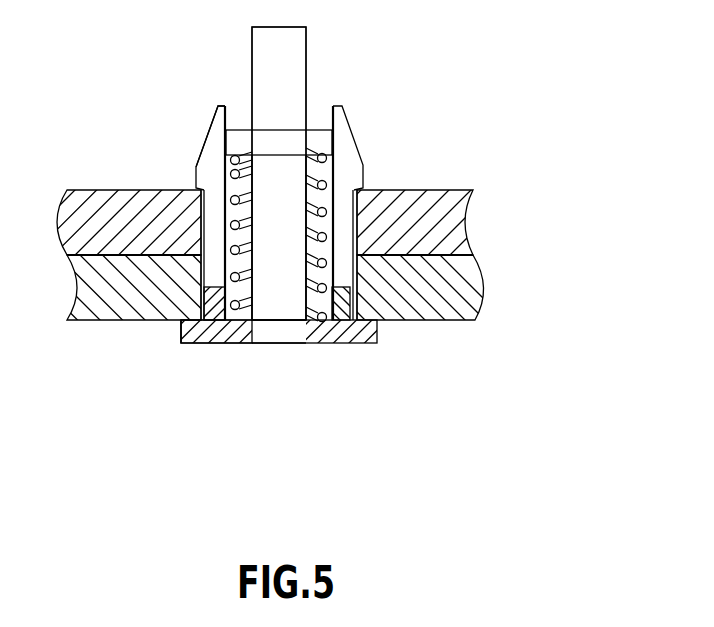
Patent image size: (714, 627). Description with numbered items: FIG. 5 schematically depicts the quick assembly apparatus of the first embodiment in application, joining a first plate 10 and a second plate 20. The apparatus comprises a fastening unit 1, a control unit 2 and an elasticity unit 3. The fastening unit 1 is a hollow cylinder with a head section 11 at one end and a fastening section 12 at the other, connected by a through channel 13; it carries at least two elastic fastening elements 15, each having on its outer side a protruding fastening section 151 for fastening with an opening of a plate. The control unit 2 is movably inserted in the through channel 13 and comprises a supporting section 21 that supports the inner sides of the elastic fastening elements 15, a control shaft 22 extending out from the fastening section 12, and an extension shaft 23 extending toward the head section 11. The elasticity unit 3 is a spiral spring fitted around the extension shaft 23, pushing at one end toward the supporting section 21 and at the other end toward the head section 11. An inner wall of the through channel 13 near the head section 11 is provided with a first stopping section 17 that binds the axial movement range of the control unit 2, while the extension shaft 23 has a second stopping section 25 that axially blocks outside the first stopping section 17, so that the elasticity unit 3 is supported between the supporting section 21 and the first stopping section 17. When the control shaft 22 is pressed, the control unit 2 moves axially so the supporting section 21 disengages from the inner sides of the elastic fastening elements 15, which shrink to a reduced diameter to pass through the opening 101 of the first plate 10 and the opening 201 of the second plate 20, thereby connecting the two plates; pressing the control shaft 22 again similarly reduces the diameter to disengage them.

The fastening unit 1 is at (211, 351).
The head section 11 is at (181, 332).
The first stopping section 17 is at (242, 334).
The second stopping section 25 is at (293, 333).
The control unit 2 is at (313, 52).
The control shaft 22 is at (297, 90).
The supporting section 21 is at (316, 145).
The extension shaft 23 is at (287, 210).
The elasticity unit 3 is at (331, 302).
The fastening section 12 is at (218, 104).
The elastic fastening elements 15 is at (218, 245).
The protruding fastening section 151 is at (195, 167).
The through channel 13 is at (330, 277).
The second plate 20 is at (447, 218).
The opening of the second plate 201 is at (357, 237).
The first plate 10 is at (463, 275).
The opening of the first plate 101 is at (325, 272).